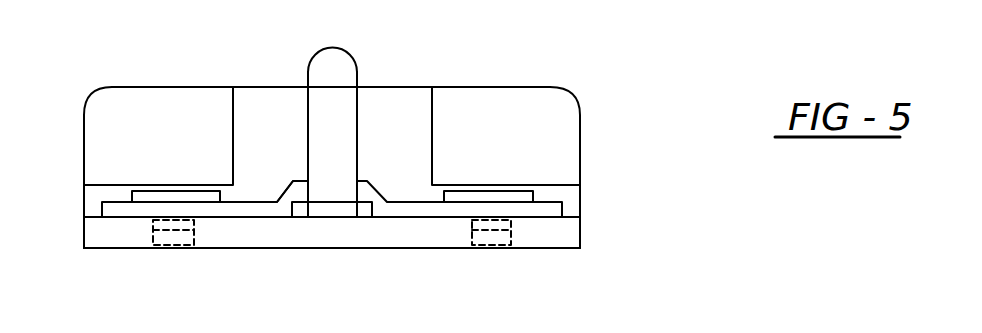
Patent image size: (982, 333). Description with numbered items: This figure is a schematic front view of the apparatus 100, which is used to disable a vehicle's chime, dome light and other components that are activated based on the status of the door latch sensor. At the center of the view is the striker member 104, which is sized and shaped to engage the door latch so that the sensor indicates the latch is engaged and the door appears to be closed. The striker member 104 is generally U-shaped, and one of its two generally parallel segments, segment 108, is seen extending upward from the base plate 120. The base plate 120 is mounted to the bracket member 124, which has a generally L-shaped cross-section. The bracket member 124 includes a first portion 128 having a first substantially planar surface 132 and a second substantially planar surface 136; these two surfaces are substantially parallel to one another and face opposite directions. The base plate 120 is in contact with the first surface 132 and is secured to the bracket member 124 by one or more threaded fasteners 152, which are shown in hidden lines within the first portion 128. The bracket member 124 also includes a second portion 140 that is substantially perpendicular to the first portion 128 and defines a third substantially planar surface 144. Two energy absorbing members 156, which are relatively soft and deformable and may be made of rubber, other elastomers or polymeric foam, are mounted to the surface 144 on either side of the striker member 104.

The apparatus 100 is at (597, 97).
The striker member 104 is at (333, 47).
The segment 108 is at (320, 122).
The base plate 120 is at (553, 210).
The bracket member 124 is at (563, 237).
The first portion 128 is at (117, 232).
The first substantially planar surface 132 is at (237, 218).
The second substantially planar surface 136 is at (405, 250).
The second portion 140 is at (395, 88).
The third substantially planar surface 144 is at (400, 142).
The threaded fastener 152 is at (175, 245).
The energy absorbing member 156 is at (134, 133).